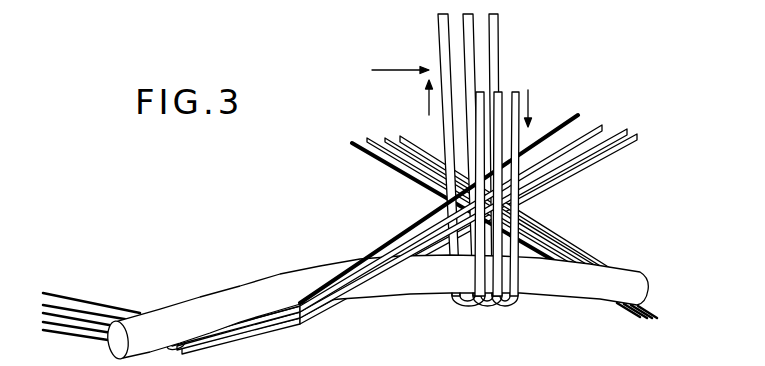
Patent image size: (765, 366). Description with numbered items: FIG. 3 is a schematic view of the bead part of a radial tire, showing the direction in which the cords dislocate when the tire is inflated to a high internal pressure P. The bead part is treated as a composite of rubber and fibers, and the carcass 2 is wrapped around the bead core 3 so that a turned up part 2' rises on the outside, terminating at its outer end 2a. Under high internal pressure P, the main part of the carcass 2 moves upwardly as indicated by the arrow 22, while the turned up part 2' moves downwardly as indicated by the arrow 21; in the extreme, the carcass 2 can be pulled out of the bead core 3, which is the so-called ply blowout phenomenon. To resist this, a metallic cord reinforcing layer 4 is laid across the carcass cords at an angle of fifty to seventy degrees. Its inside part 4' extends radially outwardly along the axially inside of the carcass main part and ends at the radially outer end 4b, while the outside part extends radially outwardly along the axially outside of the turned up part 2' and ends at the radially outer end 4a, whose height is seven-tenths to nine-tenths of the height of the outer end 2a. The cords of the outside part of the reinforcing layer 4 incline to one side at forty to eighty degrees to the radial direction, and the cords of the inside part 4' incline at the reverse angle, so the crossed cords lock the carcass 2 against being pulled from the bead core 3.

The carcass 2 is at (435, 154).
The outer end of the carcass turned up part 2a is at (518, 92).
The turned up part of the carcass 2' is at (522, 247).
The arrow 21 is at (545, 108).
The arrow 22 is at (416, 99).
The bead core 3 is at (572, 272).
The metallic cord reinforcing layer 4 is at (340, 244).
The inside part of the metallic cord reinforcing layer 4' is at (478, 230).
The radially outer end of the outside part 4a is at (627, 132).
The radially outer end of the inside part 4b is at (367, 140).
The internal pressure P is at (392, 71).